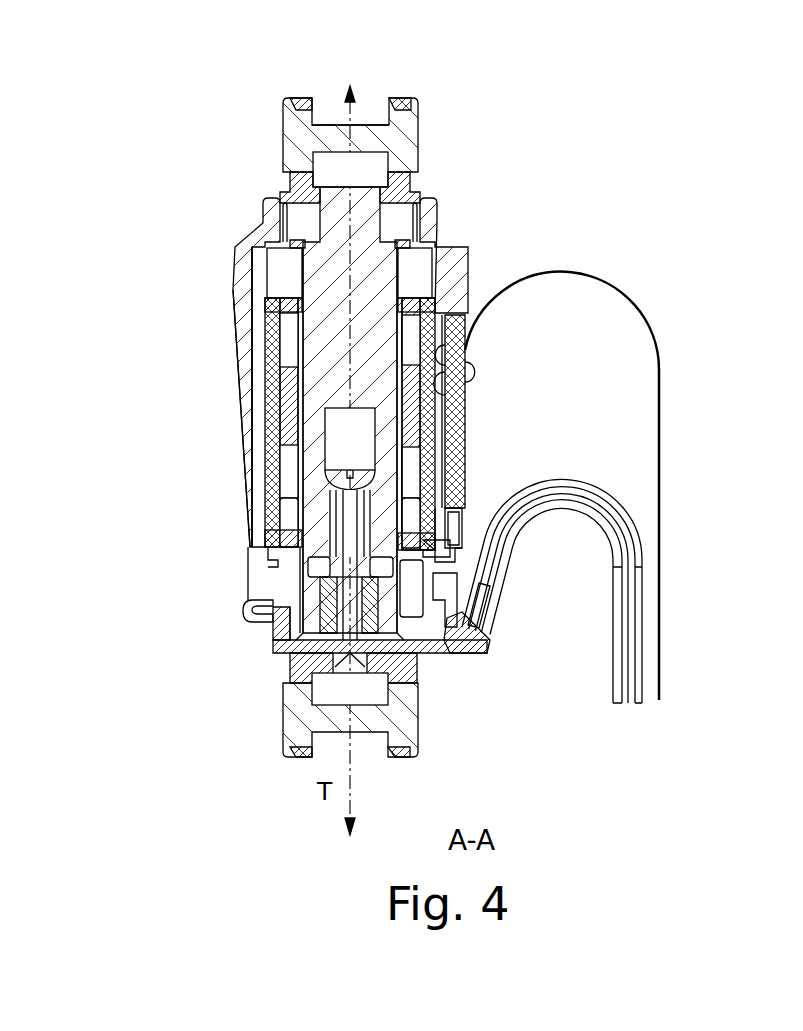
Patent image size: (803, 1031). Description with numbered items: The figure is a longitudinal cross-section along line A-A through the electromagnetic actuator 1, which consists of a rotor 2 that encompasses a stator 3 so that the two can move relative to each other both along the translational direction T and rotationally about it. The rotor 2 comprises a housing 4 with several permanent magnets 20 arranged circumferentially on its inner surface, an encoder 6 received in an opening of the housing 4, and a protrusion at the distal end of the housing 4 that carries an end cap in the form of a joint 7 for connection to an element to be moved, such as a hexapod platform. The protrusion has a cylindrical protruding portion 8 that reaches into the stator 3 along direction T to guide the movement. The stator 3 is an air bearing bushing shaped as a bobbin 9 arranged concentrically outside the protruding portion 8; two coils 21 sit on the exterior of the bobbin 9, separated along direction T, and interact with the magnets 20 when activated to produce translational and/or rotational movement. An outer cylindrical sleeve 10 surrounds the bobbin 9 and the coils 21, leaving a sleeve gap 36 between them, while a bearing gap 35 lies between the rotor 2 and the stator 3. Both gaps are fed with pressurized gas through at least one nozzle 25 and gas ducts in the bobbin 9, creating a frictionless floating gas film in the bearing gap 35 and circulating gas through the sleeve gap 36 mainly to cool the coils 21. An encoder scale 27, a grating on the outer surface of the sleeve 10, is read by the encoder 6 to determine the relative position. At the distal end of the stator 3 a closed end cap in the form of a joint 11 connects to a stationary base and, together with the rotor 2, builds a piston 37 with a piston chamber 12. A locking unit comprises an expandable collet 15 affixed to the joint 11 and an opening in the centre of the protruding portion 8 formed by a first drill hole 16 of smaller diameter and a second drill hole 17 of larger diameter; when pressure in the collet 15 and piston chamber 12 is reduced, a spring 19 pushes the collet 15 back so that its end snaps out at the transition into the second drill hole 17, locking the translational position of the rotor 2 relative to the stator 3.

The electromagnetic actuator 1 is at (192, 171).
The rotor 2 is at (84, 450).
The stator 3 is at (225, 700).
The housing 4 is at (457, 284).
The encoder 6 is at (468, 390).
The joint 7 is at (318, 142).
The protruding portion 8 is at (415, 230).
The bobbin 9 is at (282, 383).
The sleeve 10 is at (268, 417).
The joint 11 is at (312, 717).
The piston chamber 12 is at (305, 600).
The expandable collet 15 is at (270, 575).
The first drill hole 16 is at (474, 632).
The second drill hole 17 is at (484, 540).
The spring 19 is at (432, 652).
The permanent magnets 20 is at (432, 262).
The coils 21 is at (282, 338).
The nozzle 25 is at (483, 603).
The encoder scale 27 is at (278, 440).
The bearing gap 35 is at (287, 487).
The sleeve gap 36 is at (283, 393).
The piston 37 is at (442, 704).